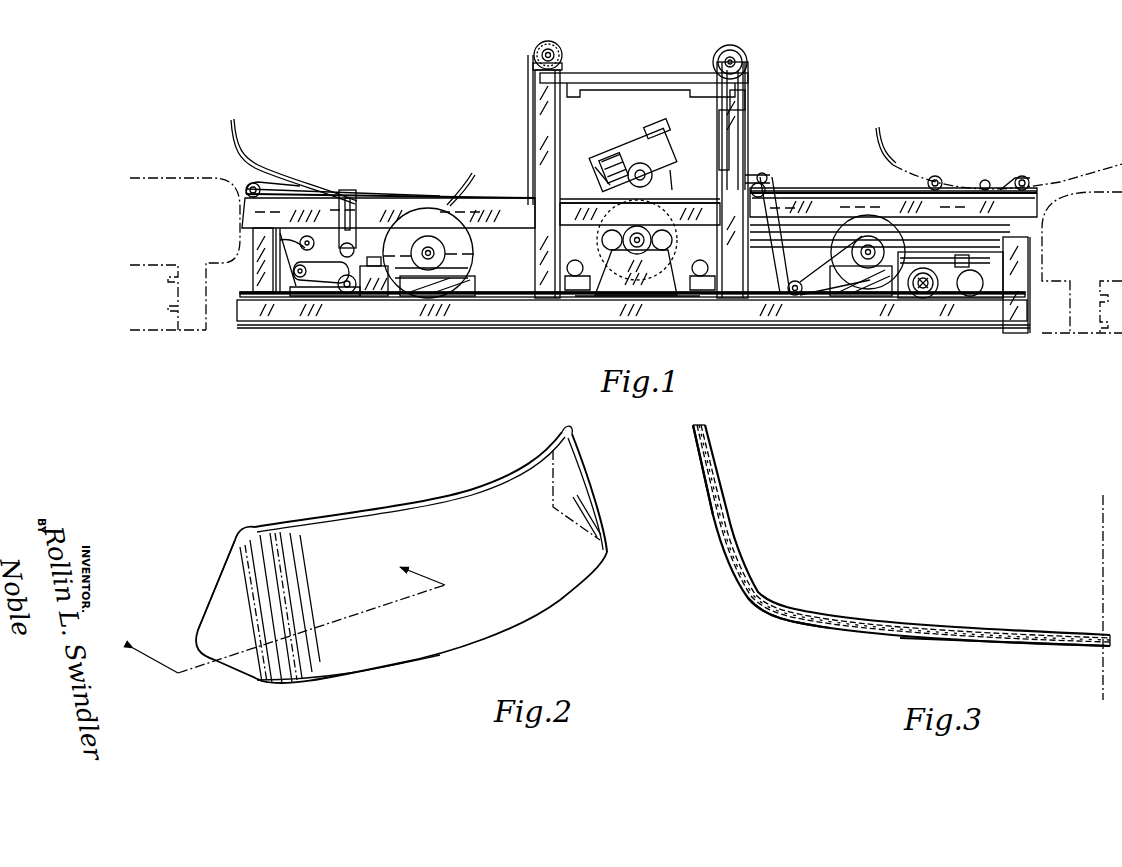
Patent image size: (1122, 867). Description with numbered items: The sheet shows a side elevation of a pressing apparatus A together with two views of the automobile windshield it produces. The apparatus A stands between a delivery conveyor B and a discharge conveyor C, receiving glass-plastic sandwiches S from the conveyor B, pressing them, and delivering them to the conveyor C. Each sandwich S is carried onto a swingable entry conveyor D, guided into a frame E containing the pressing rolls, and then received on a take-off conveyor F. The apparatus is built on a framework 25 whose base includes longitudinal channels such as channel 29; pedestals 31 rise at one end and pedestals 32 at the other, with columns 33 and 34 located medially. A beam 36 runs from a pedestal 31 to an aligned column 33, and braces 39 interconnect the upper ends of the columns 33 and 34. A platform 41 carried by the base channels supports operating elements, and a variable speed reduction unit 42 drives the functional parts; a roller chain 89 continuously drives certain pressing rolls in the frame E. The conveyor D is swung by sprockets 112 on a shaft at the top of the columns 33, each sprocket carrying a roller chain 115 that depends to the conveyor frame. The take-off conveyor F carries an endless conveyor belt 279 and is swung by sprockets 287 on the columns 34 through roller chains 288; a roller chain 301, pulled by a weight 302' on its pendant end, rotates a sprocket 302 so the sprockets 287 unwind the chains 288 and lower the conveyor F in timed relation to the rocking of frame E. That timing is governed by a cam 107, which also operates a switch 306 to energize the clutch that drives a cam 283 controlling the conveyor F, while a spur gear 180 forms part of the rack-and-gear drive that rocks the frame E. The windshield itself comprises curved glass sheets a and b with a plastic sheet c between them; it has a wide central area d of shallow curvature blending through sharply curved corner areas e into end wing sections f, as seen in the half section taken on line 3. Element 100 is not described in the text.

In FIG. 1, the pressing apparatus A is at (447, 160).
In FIG. 1, the delivery conveyor B is at (157, 177).
In FIG. 1, the discharge conveyor C is at (1108, 190).
In FIG. 1, the glass-plastic sandwich S is at (240, 140).
In FIG. 1, the entry conveyor D is at (290, 182).
In FIG. 1, the pressing-roll frame E is at (639, 150).
In FIG. 1, the take-off conveyor F is at (836, 187).
In FIG. 1, the end wing sections f is at (471, 173).
In FIG. 2, the end wing sections f is at (210, 627).
In FIG. 3, the end wing sections f is at (696, 469).
In FIG. 1, the framework 25 is at (292, 303).
In FIG. 1, the longitudinal channel 29 is at (341, 320).
In FIG. 1, the pedestals 31 is at (263, 280).
In FIG. 1, the pedestals 32 is at (1014, 300).
In FIG. 1, the columns 33 is at (545, 131).
In FIG. 1, the columns 34 is at (735, 147).
In FIG. 1, the beam 36 is at (485, 210).
In FIG. 1, the braces 39 is at (630, 83).
In FIG. 1, the platform 41 is at (497, 300).
In FIG. 1, the variable speed reduction unit 42 is at (940, 295).
In FIG. 1, the roller chain 89 is at (775, 178).
In FIG. 1, the clamp 100 is at (310, 188).
In FIG. 1, the cam 107 is at (440, 280).
In FIG. 1, the sprockets 112 is at (534, 52).
In FIG. 1, the roller chain 115 is at (528, 101).
In FIG. 1, the spur gear 180 is at (662, 250).
In FIG. 1, the endless conveyor belt 279 is at (856, 190).
In FIG. 1, the cam 283 is at (880, 265).
In FIG. 1, the sprockets 287 is at (714, 55).
In FIG. 1, the roller chain 288 is at (748, 76).
In FIG. 1, the roller chain 301 is at (722, 120).
In FIG. 1, the sprocket 302 is at (756, 116).
In FIG. 1, the weight 302' is at (761, 99).
In FIG. 1, the switch 306 is at (373, 264).
In FIG. 2, the section line 3 is at (285, 613).
In FIG. 3, the curved glass sheet a is at (714, 528).
In FIG. 3, the curved glass sheet b is at (728, 518).
In FIG. 3, the plastic sheet c is at (740, 554).
In FIG. 2, the central area d is at (453, 652).
In FIG. 3, the central area d is at (1036, 648).
In FIG. 2, the corner areas e is at (280, 660).
In FIG. 3, the corner areas e is at (750, 600).